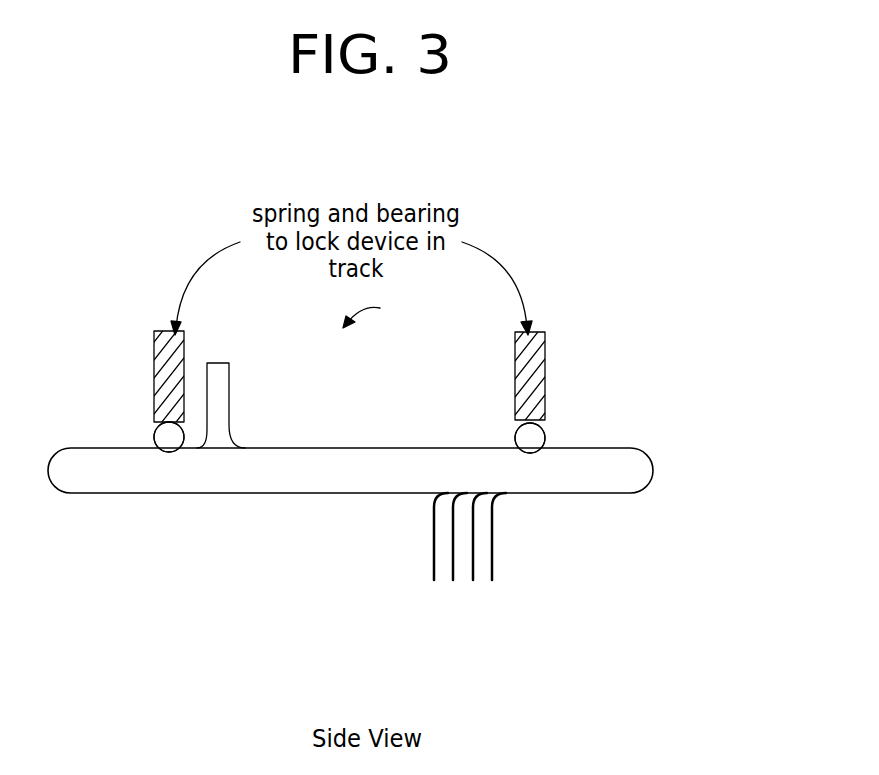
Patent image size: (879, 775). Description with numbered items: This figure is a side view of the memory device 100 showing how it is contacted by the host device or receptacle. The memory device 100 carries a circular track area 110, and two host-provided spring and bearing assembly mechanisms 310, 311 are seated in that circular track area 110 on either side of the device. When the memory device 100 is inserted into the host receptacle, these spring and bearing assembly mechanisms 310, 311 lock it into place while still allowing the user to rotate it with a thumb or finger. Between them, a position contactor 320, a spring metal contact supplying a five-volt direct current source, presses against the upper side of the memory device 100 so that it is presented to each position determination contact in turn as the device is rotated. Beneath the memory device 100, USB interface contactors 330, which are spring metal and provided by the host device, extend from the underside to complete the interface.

The memory device 100 is at (656, 462).
The circular track area 110 is at (173, 458).
The spring and bearing assembly mechanism 310 is at (140, 329).
The spring and bearing assembly mechanism 311 is at (563, 328).
The position contactor 320 is at (237, 363).
The USB interface contactors 330 is at (493, 590).